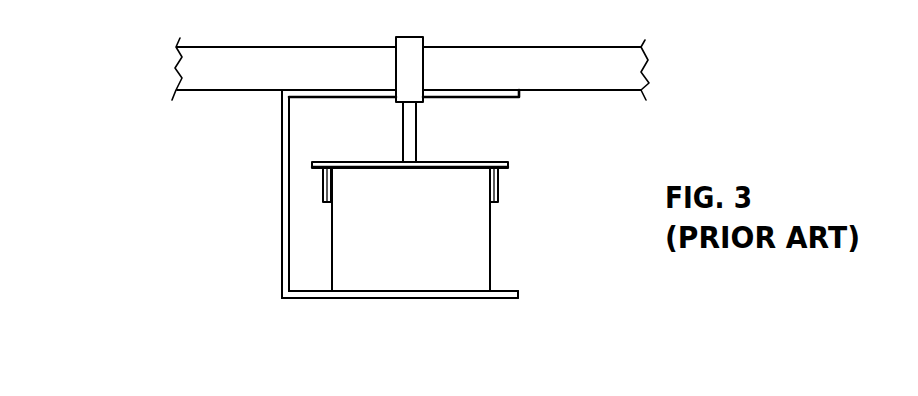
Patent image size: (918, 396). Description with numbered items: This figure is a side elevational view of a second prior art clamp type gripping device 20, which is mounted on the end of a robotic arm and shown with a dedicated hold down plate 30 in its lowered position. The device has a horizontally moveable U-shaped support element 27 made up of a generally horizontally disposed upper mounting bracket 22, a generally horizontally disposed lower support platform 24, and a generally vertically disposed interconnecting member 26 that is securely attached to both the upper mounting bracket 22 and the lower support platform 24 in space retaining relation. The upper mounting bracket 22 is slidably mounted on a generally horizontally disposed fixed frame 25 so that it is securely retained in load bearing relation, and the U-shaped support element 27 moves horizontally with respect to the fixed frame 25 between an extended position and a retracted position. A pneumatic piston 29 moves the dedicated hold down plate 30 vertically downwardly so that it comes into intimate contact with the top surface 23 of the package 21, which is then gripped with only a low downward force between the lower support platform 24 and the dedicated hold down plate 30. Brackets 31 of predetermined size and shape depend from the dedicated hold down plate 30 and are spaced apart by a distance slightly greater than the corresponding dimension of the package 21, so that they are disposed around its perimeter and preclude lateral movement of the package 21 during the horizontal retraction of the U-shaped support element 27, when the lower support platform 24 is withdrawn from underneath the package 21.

The clamp type gripping device 20 is at (118, 216).
The package 21 is at (492, 239).
The upper mounting bracket 22 is at (510, 98).
The top surface 23 is at (423, 170).
The lower support platform 24 is at (510, 299).
The fixed frame 25 is at (197, 92).
The interconnecting member 26 is at (281, 201).
The U-shaped support element 27 is at (281, 298).
The pneumatic piston 29 is at (426, 67).
The dedicated hold down plate 30 is at (462, 161).
The brackets 31 is at (322, 181).